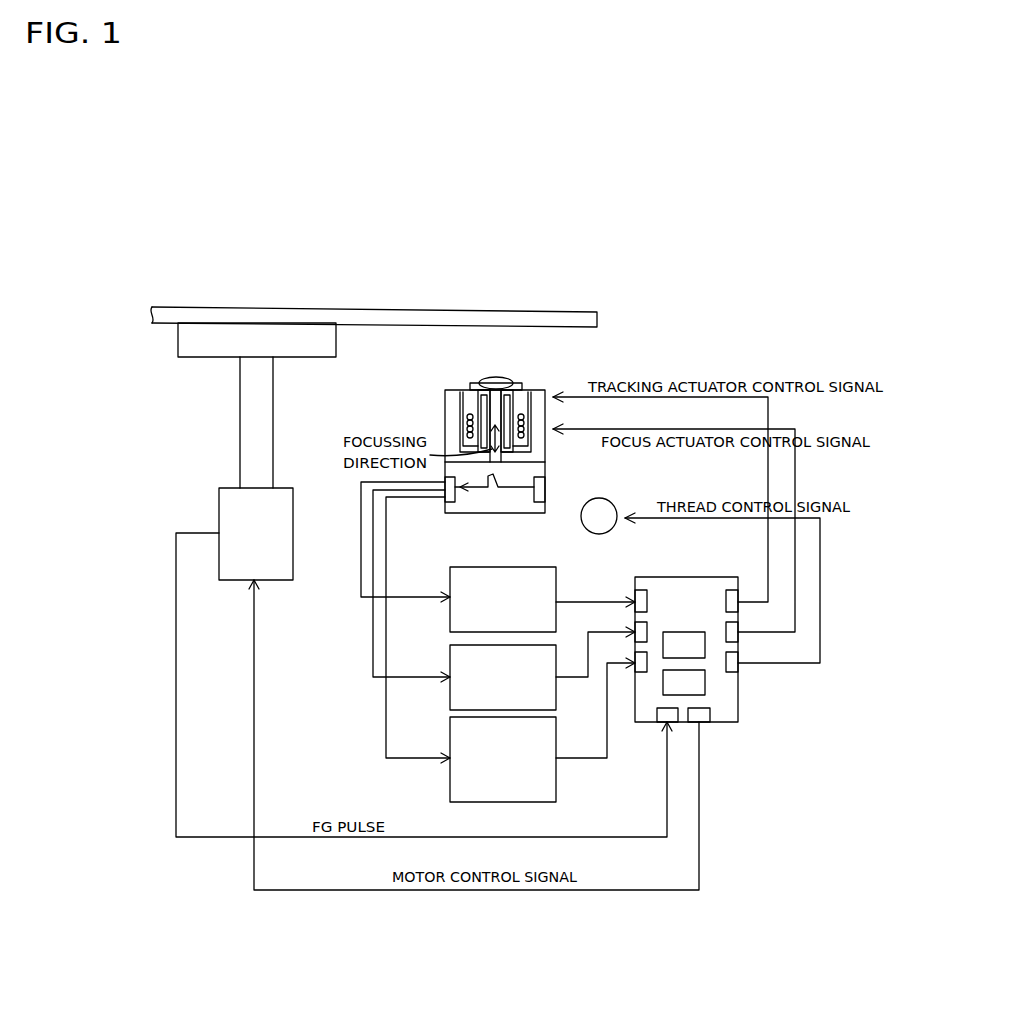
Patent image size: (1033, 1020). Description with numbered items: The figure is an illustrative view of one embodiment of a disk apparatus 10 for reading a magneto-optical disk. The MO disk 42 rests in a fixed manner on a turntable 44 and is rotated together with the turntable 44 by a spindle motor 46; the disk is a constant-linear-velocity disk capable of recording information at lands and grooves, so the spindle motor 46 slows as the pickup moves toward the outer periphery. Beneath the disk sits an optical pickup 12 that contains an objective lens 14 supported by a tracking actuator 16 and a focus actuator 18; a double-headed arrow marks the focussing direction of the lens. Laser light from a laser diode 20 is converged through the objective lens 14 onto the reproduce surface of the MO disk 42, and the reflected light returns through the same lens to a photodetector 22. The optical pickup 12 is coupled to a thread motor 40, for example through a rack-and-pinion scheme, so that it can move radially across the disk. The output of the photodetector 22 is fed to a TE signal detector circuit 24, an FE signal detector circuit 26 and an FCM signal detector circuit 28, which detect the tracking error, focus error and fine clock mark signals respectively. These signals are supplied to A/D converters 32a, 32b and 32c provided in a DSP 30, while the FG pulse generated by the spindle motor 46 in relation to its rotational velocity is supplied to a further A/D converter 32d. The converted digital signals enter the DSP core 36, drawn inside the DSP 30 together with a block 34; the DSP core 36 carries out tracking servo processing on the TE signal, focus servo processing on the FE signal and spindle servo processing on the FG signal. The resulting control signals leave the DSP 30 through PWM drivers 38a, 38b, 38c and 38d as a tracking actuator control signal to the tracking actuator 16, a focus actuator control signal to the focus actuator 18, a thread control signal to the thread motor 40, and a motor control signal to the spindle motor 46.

The disk apparatus 10 is at (150, 247).
The optical pickup 12 is at (543, 388).
The optical lens (objective lens) 14 is at (499, 378).
The tracking actuator 16 is at (467, 383).
The focus actuator 18 is at (466, 420).
The laser diode 20 is at (545, 488).
The photodetector 22 is at (458, 514).
The TE signal detector circuit 24 is at (530, 567).
The FE signal detector circuit 26 is at (557, 668).
The FCM signal detector circuit 28 is at (557, 750).
The DSP (Digital Signal Processor) 30 is at (686, 676).
The A/D converter 32a is at (635, 596).
The A/D converter 32b is at (635, 628).
The A/D converter 32c is at (641, 673).
The A/D converter 32d is at (673, 723).
The processing block 34 is at (684, 645).
The DSP core 36 is at (684, 682).
The PWM driver 38a is at (740, 607).
The PWM driver 38b is at (740, 637).
The PWM driver 38c is at (740, 670).
The PWM driver 38d is at (703, 723).
The thread motor 40 is at (605, 499).
The magneto-optical disk (MO disk) 42 is at (288, 308).
The turntable 44 is at (199, 357).
The spindle motor 46 is at (220, 500).